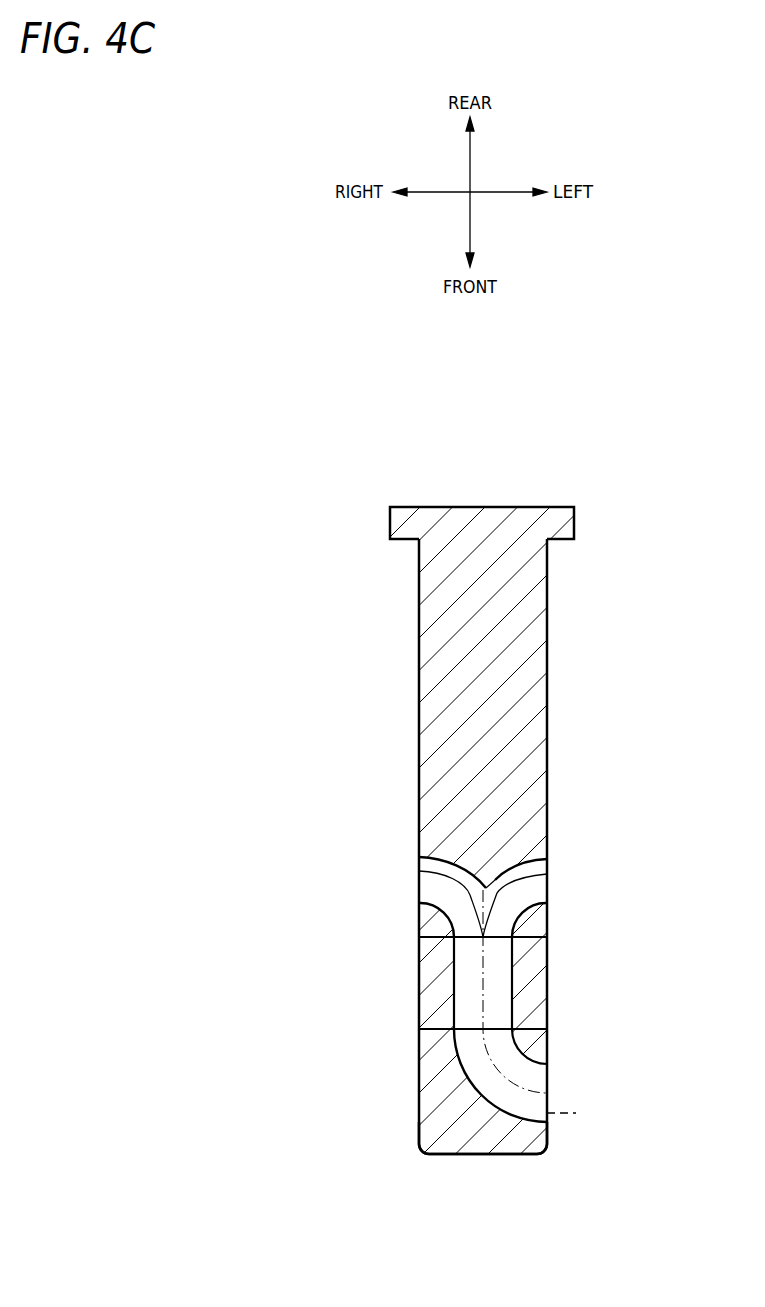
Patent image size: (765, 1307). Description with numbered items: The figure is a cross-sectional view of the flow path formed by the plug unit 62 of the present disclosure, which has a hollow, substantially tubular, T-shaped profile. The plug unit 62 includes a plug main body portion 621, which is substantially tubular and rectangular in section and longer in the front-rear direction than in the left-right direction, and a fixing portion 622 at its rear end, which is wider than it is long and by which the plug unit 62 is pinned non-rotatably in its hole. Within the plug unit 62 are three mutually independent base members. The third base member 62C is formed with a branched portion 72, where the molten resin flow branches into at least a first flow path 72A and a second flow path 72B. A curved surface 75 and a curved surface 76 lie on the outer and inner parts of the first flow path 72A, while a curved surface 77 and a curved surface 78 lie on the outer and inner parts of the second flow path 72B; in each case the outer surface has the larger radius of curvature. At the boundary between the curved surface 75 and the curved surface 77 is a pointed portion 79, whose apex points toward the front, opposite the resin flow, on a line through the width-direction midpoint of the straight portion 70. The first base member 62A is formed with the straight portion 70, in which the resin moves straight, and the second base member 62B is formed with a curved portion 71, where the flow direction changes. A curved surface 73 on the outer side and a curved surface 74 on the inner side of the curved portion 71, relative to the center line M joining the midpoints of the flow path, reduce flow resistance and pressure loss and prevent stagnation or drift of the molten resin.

The plug unit 62 is at (512, 438).
The plug main body portion 621 is at (548, 653).
The fixing portion 622 is at (563, 541).
The third base member 62C is at (522, 792).
The first base member 62A is at (530, 1007).
The second base member 62B is at (508, 1142).
The straight portion 70 is at (500, 973).
The curved portion 71 is at (473, 1062).
The branched portion 72 is at (445, 895).
The first flow path 72A is at (445, 880).
The second flow path 72B is at (538, 861).
The curved surface 73 is at (502, 1098).
The curved surface 74 is at (548, 1073).
The curved surface 75 is at (450, 863).
The curved surface 76 is at (420, 907).
The curved surface 77 is at (538, 876).
The curved surface 78 is at (535, 898).
The pointed portion 79 is at (514, 891).
The center line M is at (576, 1115).